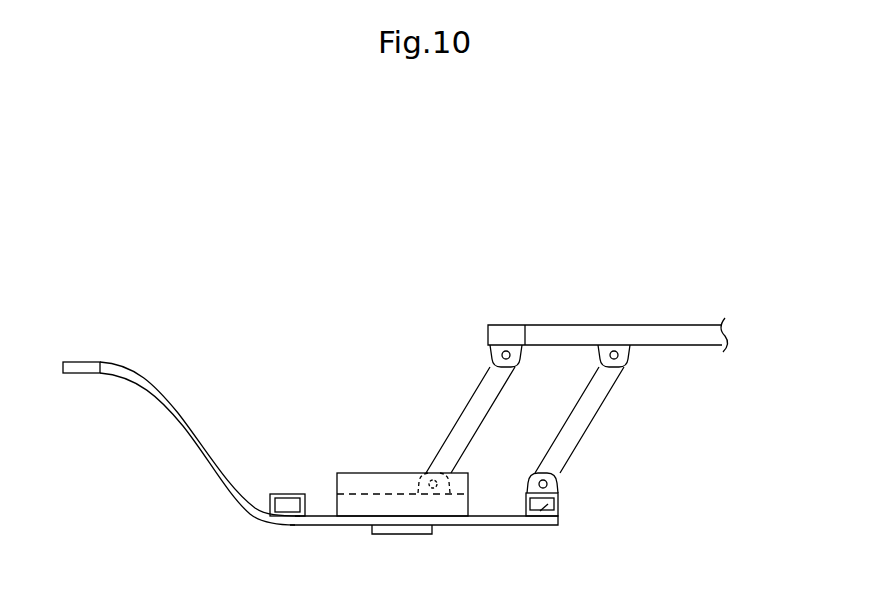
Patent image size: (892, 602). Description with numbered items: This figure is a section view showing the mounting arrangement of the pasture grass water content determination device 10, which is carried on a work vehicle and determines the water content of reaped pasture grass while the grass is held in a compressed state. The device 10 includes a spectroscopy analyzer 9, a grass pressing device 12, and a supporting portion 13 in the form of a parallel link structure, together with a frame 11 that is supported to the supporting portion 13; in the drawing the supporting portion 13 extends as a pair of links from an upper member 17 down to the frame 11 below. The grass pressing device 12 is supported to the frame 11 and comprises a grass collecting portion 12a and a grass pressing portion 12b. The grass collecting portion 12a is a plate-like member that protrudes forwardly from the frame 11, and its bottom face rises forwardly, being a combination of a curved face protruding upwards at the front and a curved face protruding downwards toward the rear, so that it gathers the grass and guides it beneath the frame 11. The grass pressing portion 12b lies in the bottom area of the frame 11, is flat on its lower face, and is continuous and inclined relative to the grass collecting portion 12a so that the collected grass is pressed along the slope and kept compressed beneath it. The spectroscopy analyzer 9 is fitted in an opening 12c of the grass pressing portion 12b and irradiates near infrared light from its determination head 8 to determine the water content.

The pasture grass water content determination device 10 is at (345, 345).
The grass pressing device 12 is at (172, 409).
The grass collecting portion 12a is at (178, 428).
The grass pressing portion 12b is at (299, 527).
The opening 12c is at (333, 493).
The frame 11 is at (277, 494).
The spectroscopy analyzer 9 is at (386, 473).
The determination head 8 is at (412, 535).
The supporting portion 13 is at (478, 402).
The support bar 17 is at (653, 330).